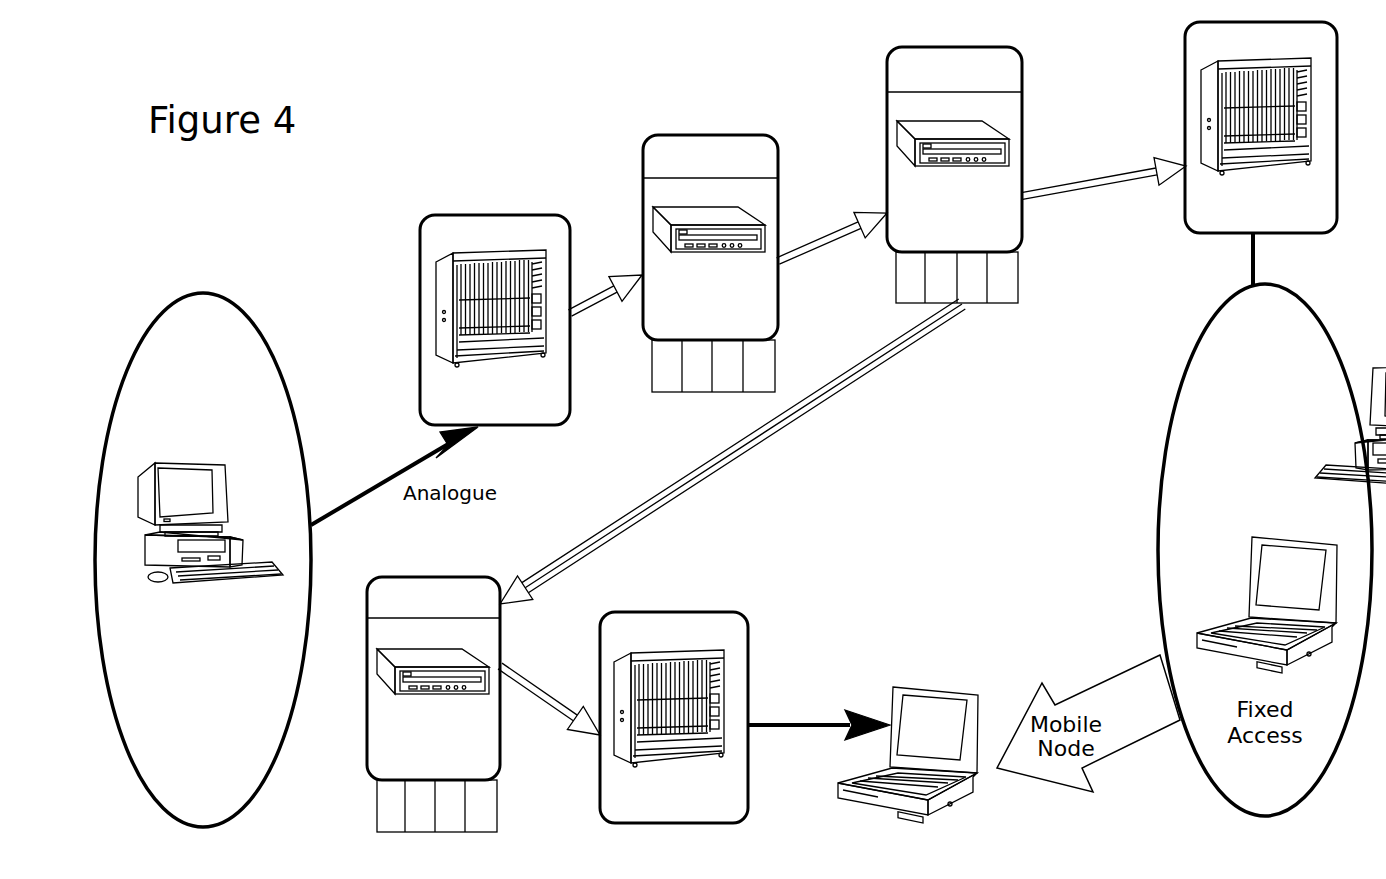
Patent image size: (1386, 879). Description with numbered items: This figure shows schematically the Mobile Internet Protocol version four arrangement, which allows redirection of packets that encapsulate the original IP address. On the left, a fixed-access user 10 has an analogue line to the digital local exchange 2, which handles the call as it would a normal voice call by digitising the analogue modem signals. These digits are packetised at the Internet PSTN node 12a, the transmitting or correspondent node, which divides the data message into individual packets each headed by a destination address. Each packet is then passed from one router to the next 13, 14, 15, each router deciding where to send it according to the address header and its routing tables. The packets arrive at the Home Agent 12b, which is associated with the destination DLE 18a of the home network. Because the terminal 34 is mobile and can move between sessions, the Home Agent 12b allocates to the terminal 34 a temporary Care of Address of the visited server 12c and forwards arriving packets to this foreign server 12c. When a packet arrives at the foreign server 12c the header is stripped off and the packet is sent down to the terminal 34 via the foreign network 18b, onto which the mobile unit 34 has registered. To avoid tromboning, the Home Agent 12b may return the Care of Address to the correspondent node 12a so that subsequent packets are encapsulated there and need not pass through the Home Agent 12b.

The user 10 is at (230, 300).
The digital local exchange 2 is at (460, 215).
The Internet PSTN node 12a is at (700, 135).
The Home Agent 12b is at (1022, 123).
The foreign server 12c is at (407, 577).
The router 13 is at (804, 168).
The router 14 is at (832, 238).
The router 15 is at (838, 237).
The destination DLE 18a is at (1186, 48).
The network 18b is at (748, 677).
The terminal 34 is at (950, 802).